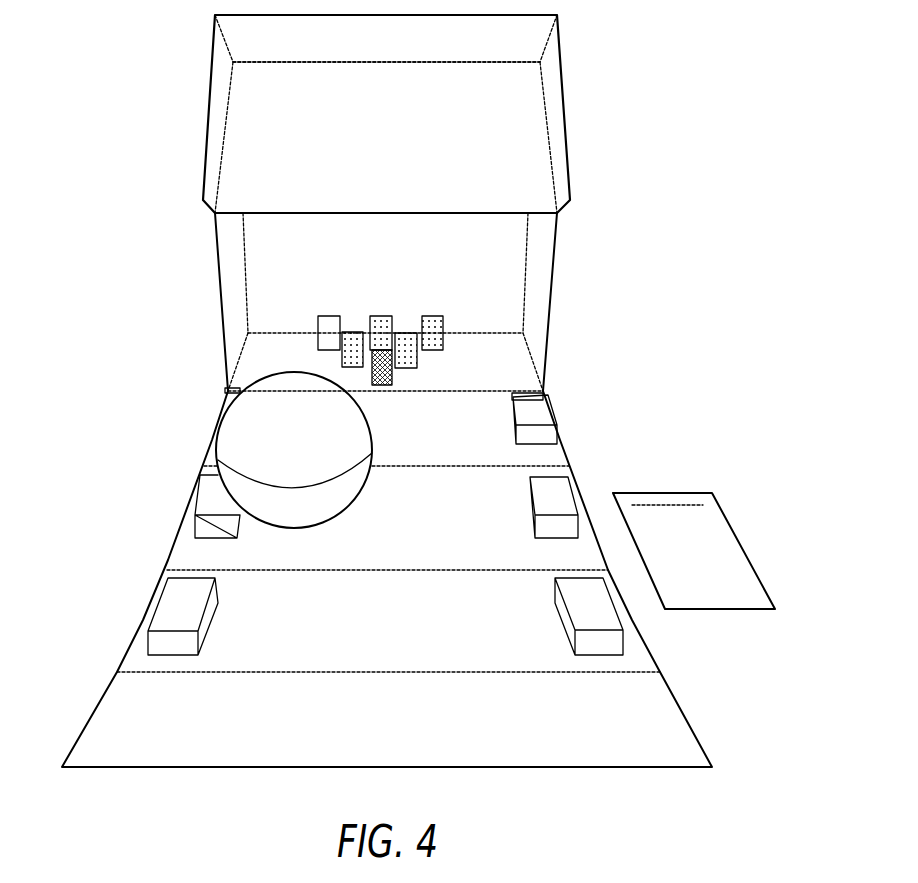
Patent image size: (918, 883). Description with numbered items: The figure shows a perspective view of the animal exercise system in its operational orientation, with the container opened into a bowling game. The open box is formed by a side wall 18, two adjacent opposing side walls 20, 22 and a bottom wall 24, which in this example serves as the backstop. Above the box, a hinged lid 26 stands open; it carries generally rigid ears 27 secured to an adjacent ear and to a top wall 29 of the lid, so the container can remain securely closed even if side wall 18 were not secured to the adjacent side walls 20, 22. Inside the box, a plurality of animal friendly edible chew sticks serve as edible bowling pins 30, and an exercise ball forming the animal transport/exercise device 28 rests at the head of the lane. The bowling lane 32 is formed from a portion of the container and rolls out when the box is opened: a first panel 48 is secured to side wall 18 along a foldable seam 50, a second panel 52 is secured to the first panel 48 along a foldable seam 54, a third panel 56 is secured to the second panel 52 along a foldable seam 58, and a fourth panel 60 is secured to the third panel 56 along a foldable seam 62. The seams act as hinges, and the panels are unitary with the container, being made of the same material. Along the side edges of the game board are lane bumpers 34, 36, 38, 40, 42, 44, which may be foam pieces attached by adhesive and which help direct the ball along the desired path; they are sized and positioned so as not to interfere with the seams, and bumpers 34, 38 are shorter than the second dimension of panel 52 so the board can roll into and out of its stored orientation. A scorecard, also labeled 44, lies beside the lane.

The side wall 18 is at (292, 366).
The side wall 20 is at (537, 277).
The side wall 22 is at (235, 278).
The bottom wall 24 is at (355, 284).
The hinged lid 26 is at (205, 116).
The rigid ears 27 is at (222, 110).
The animal transport/exercise device 28 is at (313, 444).
The top wall 29 is at (413, 148).
The edible chew sticks/edible bowling pins 30 is at (383, 316).
The bowling lane 32 is at (500, 461).
The lane bumper 34 is at (613, 640).
The lane bumper 36 is at (168, 610).
The lane bumper 38 is at (558, 496).
The lane bumper 40 is at (208, 502).
The lane bumper 42 is at (543, 410).
The lane bumper / scorecard 44 is at (227, 393).
The first panel 48 is at (429, 446).
The foldable seam 50 is at (477, 388).
The second panel 52 is at (428, 533).
The foldable seam 54 is at (437, 466).
The third panel 56 is at (428, 628).
The foldable seam 58 is at (462, 570).
The fourth panel 60 is at (428, 733).
The foldable seam 62 is at (478, 672).